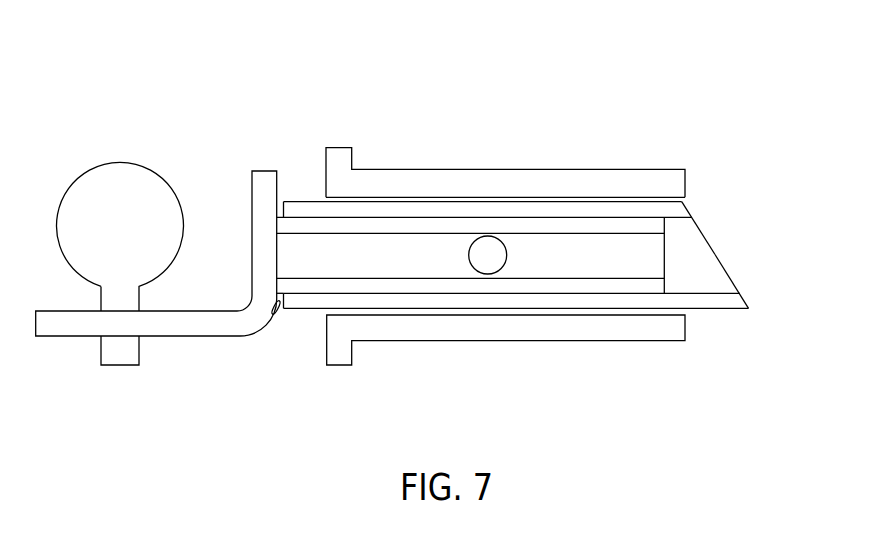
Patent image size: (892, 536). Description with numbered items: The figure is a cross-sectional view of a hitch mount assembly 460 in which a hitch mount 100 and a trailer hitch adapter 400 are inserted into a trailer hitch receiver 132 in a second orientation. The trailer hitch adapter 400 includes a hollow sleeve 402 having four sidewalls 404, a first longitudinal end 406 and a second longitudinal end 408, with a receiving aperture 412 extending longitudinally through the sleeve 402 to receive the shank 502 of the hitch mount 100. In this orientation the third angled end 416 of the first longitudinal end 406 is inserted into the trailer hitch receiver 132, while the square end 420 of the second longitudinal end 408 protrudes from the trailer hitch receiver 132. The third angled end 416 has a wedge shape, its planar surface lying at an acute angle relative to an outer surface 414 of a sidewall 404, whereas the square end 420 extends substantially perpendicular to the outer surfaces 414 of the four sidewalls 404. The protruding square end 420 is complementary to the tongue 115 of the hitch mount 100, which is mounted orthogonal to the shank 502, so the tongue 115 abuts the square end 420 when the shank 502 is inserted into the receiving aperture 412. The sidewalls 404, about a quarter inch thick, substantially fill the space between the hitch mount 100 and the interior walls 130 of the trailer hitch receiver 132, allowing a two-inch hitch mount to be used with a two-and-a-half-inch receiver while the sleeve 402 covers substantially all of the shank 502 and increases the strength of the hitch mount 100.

The hitch mount 100 is at (667, 255).
The tongue 115 is at (173, 329).
The interior walls 130 is at (503, 110).
The trailer hitch receiver 132 is at (398, 181).
The trailer hitch adapter 400 is at (689, 205).
The hollow sleeve 402 is at (498, 212).
The sidewalls 404 is at (527, 267).
The first longitudinal end 406 is at (738, 287).
The second longitudinal end 408 is at (274, 313).
The receiving aperture 412 is at (577, 216).
The outer surface 414 is at (320, 200).
The third angled end 416 is at (735, 271).
The square end 420 is at (278, 318).
The hitch mount assembly 460 is at (505, 195).
The shank 502 is at (657, 227).